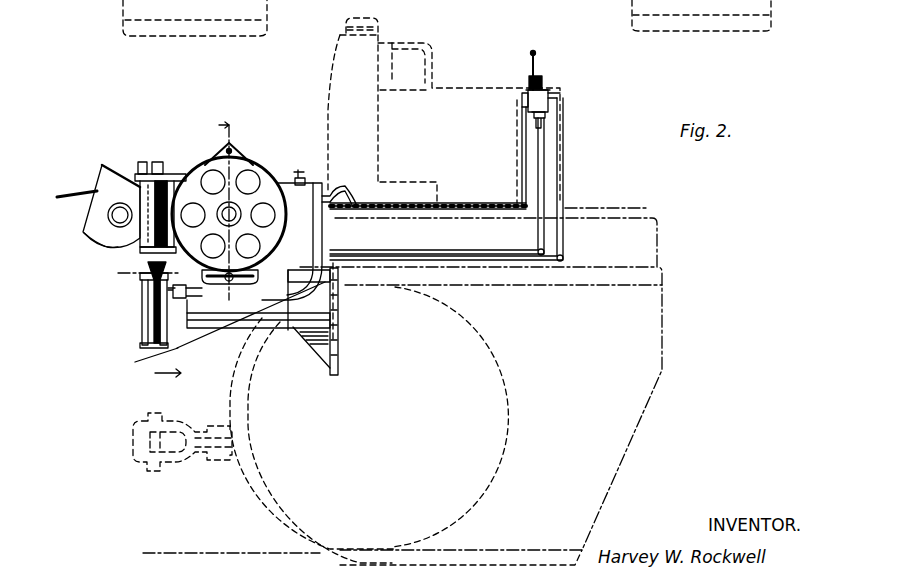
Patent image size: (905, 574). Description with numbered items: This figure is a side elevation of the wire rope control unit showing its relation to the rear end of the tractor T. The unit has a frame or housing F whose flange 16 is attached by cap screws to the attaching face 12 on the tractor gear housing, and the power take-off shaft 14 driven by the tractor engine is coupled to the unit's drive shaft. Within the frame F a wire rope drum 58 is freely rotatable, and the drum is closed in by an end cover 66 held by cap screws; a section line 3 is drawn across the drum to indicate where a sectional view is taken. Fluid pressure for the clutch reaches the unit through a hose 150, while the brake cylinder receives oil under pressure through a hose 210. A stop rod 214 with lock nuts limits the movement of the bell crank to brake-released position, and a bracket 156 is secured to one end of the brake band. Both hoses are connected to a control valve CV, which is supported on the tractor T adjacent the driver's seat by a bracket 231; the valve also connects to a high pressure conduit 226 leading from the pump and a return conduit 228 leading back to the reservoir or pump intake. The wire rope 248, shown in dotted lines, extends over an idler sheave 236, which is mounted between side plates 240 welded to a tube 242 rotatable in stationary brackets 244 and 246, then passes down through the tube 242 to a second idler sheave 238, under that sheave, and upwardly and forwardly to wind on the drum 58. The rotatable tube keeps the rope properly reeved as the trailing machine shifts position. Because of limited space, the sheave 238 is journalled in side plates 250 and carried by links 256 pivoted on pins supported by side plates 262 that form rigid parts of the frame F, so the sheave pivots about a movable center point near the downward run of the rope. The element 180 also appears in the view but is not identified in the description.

The wire rope 248 is at (73, 192).
The idler sheave 236 is at (113, 185).
The tube 242 is at (156, 162).
The stationary bracket 244 is at (175, 178).
The section line 3- 3 is at (192, 248).
The stop rod 214 is at (298, 170).
The end cover 66 is at (262, 180).
The hose 210 is at (347, 190).
The bracket 231 is at (540, 128).
The return conduit 228 is at (564, 161).
The high pressure conduit 226 is at (546, 180).
The control valve CV is at (552, 86).
The tractor T is at (382, 42).
The side plates 240 is at (100, 213).
The stationary bracket 246 is at (130, 248).
The power take-off shaft 14 is at (351, 327).
The links 256 is at (143, 298).
The side plates 250 is at (140, 356).
The idler sheave 238 is at (194, 335).
The bracket 156 is at (239, 287).
The stop 180 is at (205, 300).
The side plates 262 is at (227, 318).
The frame F is at (258, 333).
The wire rope drum 58 is at (292, 241).
The hose 150 is at (335, 211).
The flange 16 is at (338, 282).
The attaching face 12 is at (338, 346).